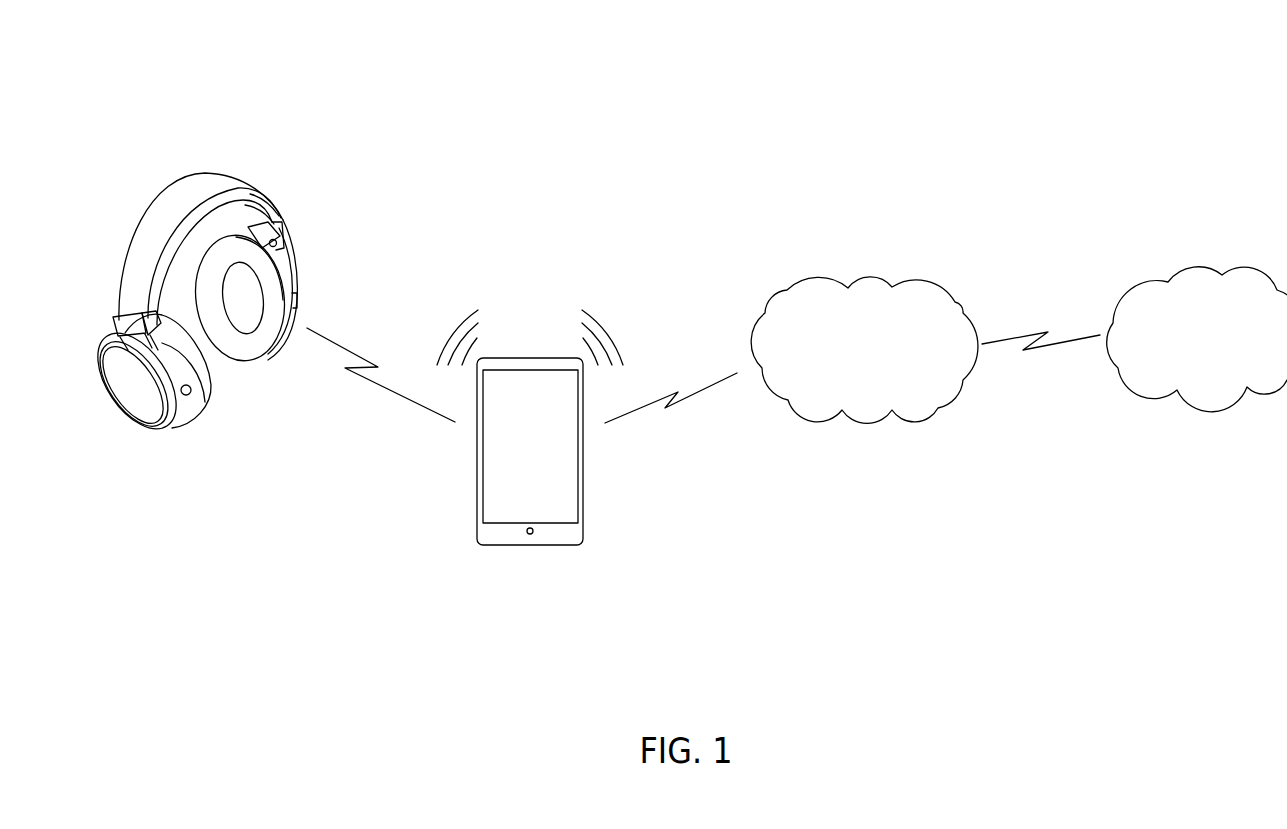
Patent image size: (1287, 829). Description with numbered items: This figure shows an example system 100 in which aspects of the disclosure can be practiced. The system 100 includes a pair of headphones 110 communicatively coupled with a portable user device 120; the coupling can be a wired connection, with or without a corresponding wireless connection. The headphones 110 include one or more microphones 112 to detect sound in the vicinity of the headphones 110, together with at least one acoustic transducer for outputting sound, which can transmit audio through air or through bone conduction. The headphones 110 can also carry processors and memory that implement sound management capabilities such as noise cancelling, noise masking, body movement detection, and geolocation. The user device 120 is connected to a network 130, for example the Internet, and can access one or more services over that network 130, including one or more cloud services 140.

The system 100 is at (1086, 112).
The headphones 110 is at (213, 183).
The microphone 112 is at (191, 393).
The portable user device 120 is at (528, 547).
The network 130 is at (882, 382).
The cloud services 140 is at (1228, 365).